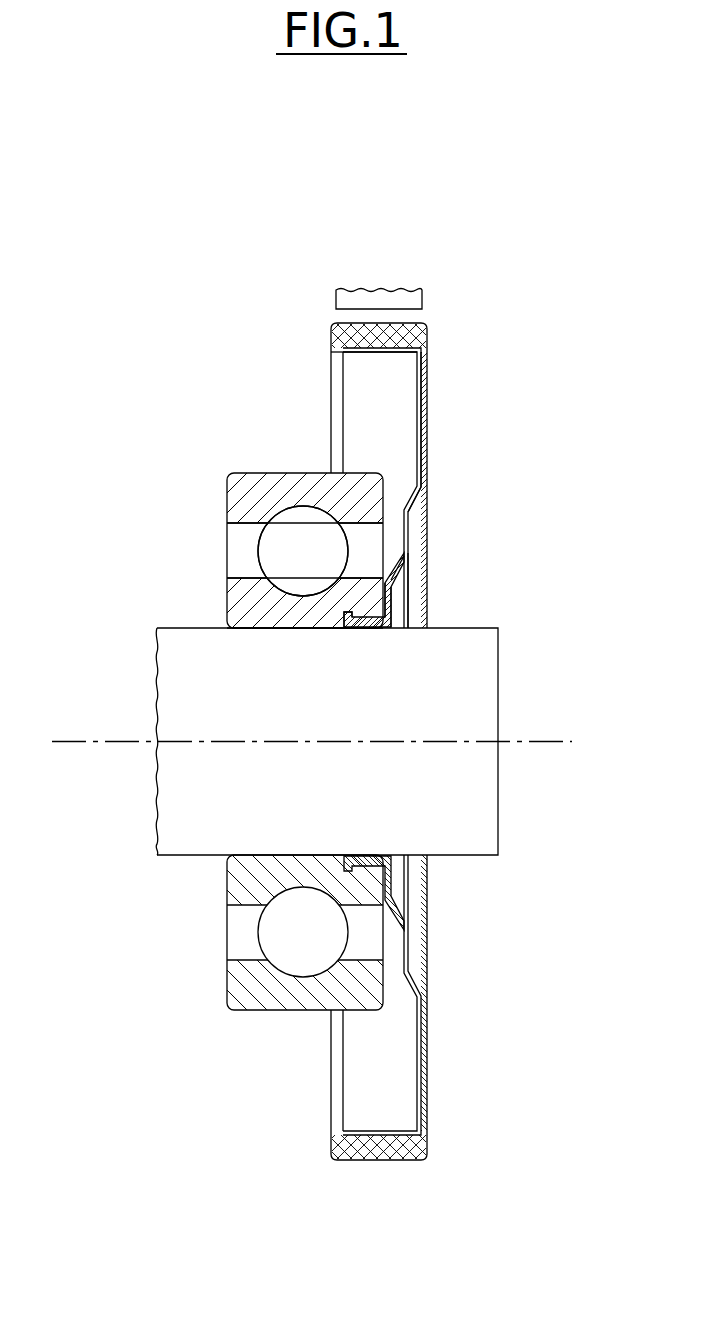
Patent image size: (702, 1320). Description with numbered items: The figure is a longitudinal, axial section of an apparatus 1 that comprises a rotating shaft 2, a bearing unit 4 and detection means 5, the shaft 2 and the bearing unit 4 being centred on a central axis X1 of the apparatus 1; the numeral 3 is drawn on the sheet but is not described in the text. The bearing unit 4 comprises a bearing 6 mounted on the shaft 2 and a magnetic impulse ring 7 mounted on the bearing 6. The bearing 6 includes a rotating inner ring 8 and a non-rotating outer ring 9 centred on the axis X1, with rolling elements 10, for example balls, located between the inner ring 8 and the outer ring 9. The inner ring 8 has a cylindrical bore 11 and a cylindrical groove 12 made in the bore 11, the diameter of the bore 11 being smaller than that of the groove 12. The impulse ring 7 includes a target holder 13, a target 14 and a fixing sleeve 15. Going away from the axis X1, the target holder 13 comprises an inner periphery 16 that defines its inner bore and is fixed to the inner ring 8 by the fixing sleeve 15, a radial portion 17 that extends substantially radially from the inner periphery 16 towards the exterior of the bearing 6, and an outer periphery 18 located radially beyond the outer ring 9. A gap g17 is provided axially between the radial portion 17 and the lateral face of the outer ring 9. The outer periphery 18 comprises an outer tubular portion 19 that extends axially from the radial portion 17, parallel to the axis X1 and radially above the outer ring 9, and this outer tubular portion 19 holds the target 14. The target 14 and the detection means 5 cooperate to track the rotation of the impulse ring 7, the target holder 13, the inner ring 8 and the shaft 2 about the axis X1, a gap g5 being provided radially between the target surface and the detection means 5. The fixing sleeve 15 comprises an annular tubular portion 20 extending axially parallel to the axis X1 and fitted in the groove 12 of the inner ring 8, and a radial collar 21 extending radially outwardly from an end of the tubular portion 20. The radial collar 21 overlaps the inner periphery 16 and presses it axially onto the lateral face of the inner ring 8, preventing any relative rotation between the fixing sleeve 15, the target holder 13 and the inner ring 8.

The apparatus 1 is at (136, 333).
The rotating shaft 2 is at (493, 718).
The pulley assembly 3 is at (206, 420).
The bearing unit 4 is at (311, 435).
The detection means 5 is at (425, 301).
The bearing 6 is at (201, 557).
The magnetic impulse ring 7 is at (438, 536).
The rotating inner ring 8 is at (227, 603).
The non-rotating outer ring 9 is at (227, 498).
The rolling elements 10 is at (316, 563).
The cylindrical bore 11 is at (263, 632).
The cylindrical groove 12 is at (359, 628).
The target holder 13 is at (432, 487).
The target 14 is at (431, 340).
The fixing sleeve 15 is at (405, 600).
The inner periphery 16 is at (386, 582).
The radial portion 17 is at (428, 425).
The outer periphery 18 is at (332, 354).
The outer tubular portion 19 is at (377, 352).
The annular tubular portion 20 is at (384, 626).
The radial collar 21 is at (393, 613).
The central axis X1 is at (72, 737).
The gap g5 is at (347, 317).
The gap g17 is at (402, 498).